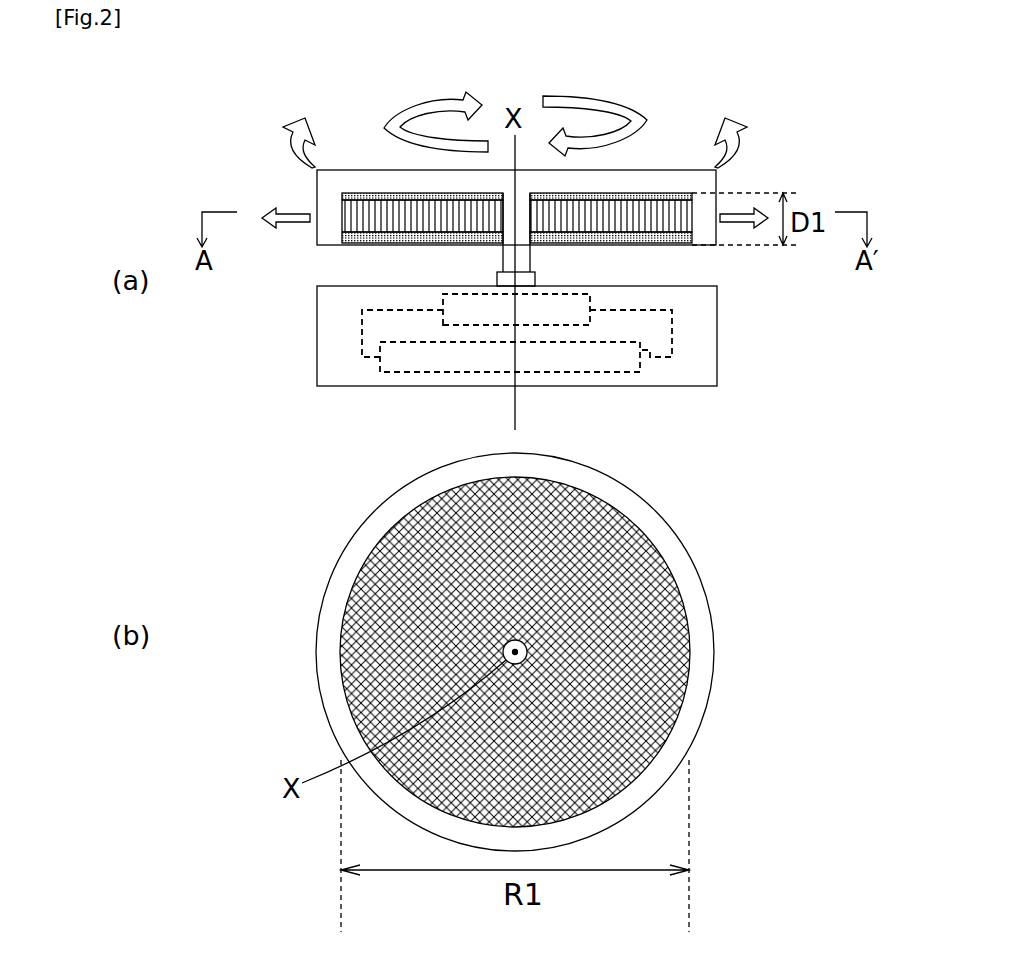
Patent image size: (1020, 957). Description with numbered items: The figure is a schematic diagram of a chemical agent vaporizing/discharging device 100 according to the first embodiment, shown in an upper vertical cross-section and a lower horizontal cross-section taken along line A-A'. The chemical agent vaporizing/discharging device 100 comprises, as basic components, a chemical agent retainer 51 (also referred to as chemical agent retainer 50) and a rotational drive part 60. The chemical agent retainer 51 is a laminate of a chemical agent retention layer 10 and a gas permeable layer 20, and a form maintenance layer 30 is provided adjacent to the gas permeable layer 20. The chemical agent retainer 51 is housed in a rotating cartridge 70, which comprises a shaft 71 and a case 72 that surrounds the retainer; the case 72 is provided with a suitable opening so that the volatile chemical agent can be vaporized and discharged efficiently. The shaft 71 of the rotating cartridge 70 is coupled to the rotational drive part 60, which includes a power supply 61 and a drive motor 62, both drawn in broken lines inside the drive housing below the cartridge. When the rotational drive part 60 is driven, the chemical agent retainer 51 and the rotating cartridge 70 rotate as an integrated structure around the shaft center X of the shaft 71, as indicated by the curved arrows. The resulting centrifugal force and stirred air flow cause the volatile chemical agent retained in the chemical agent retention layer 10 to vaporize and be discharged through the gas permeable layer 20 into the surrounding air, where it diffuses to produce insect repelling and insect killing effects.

The chemical agent retention layer 10 is at (540, 467).
The gas permeable layer 20 is at (353, 217).
The form maintenance layer 30 is at (366, 193).
The chemical agent retainer 50 is at (683, 251).
The chemical agent retainer 51 is at (592, 269).
The rotational drive part 60 is at (563, 364).
The power supply 61 is at (423, 363).
The drive motor 62 is at (480, 317).
The rotating cartridge 70 is at (521, 468).
The shaft 71 is at (512, 232).
The case 72 is at (325, 227).
The chemical agent vaporizing/discharging device 100 is at (559, 463).